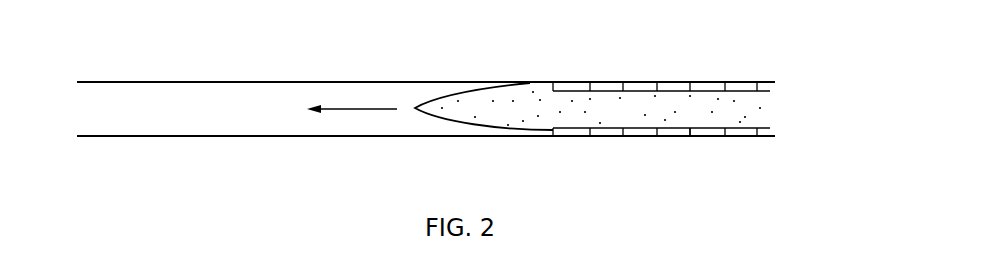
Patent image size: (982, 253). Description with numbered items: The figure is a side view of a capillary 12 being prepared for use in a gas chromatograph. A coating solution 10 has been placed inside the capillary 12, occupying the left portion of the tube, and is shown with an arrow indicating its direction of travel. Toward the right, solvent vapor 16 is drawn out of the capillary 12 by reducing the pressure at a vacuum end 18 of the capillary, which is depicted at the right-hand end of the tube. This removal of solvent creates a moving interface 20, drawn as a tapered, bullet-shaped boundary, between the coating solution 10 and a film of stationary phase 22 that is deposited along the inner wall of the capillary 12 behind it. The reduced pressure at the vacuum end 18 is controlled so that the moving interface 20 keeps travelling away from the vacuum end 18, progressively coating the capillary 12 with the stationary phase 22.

The coating solution 10 is at (232, 122).
The capillary 12 is at (255, 82).
The solvent vapor 16 is at (640, 121).
The vacuum end 18 is at (760, 109).
The moving interface 20 is at (428, 115).
The film of stationary phase 22 is at (670, 128).